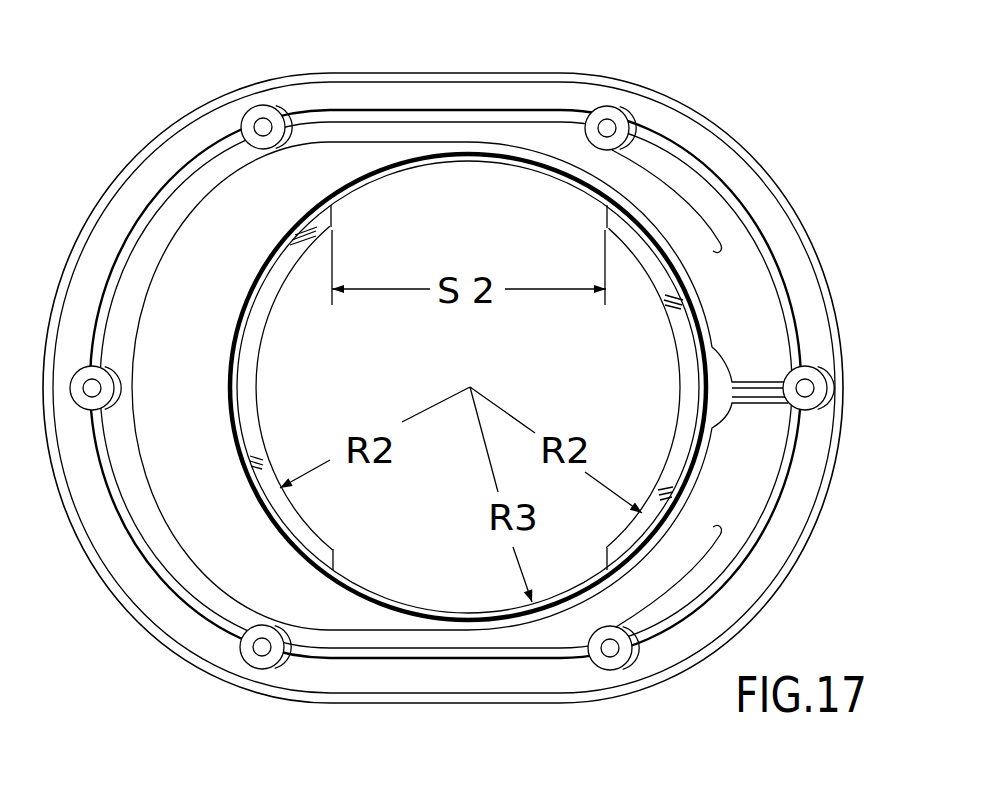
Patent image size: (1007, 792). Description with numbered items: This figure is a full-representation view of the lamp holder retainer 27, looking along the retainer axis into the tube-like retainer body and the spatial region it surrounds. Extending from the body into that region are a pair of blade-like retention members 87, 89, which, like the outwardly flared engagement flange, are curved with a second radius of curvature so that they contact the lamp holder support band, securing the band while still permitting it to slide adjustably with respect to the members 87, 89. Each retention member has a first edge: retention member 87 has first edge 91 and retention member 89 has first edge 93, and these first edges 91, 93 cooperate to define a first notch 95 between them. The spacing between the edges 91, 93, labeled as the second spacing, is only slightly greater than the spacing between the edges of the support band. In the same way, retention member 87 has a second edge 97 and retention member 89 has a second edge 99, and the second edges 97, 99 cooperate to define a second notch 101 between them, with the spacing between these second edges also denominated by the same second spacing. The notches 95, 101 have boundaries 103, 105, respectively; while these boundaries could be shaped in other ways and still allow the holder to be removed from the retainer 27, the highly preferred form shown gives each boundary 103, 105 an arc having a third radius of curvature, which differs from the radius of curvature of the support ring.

The lamp holder retainer 27 is at (823, 281).
The retention member 87 is at (257, 317).
The retention member 89 is at (687, 437).
The first edge 91 is at (333, 217).
The first edge 93 is at (605, 212).
The first notch 95 is at (462, 186).
The second edge 97 is at (358, 508).
The second edge 99 is at (608, 553).
The second notch 101 is at (459, 578).
The notch boundary 103 is at (383, 175).
The notch boundary 105 is at (382, 597).